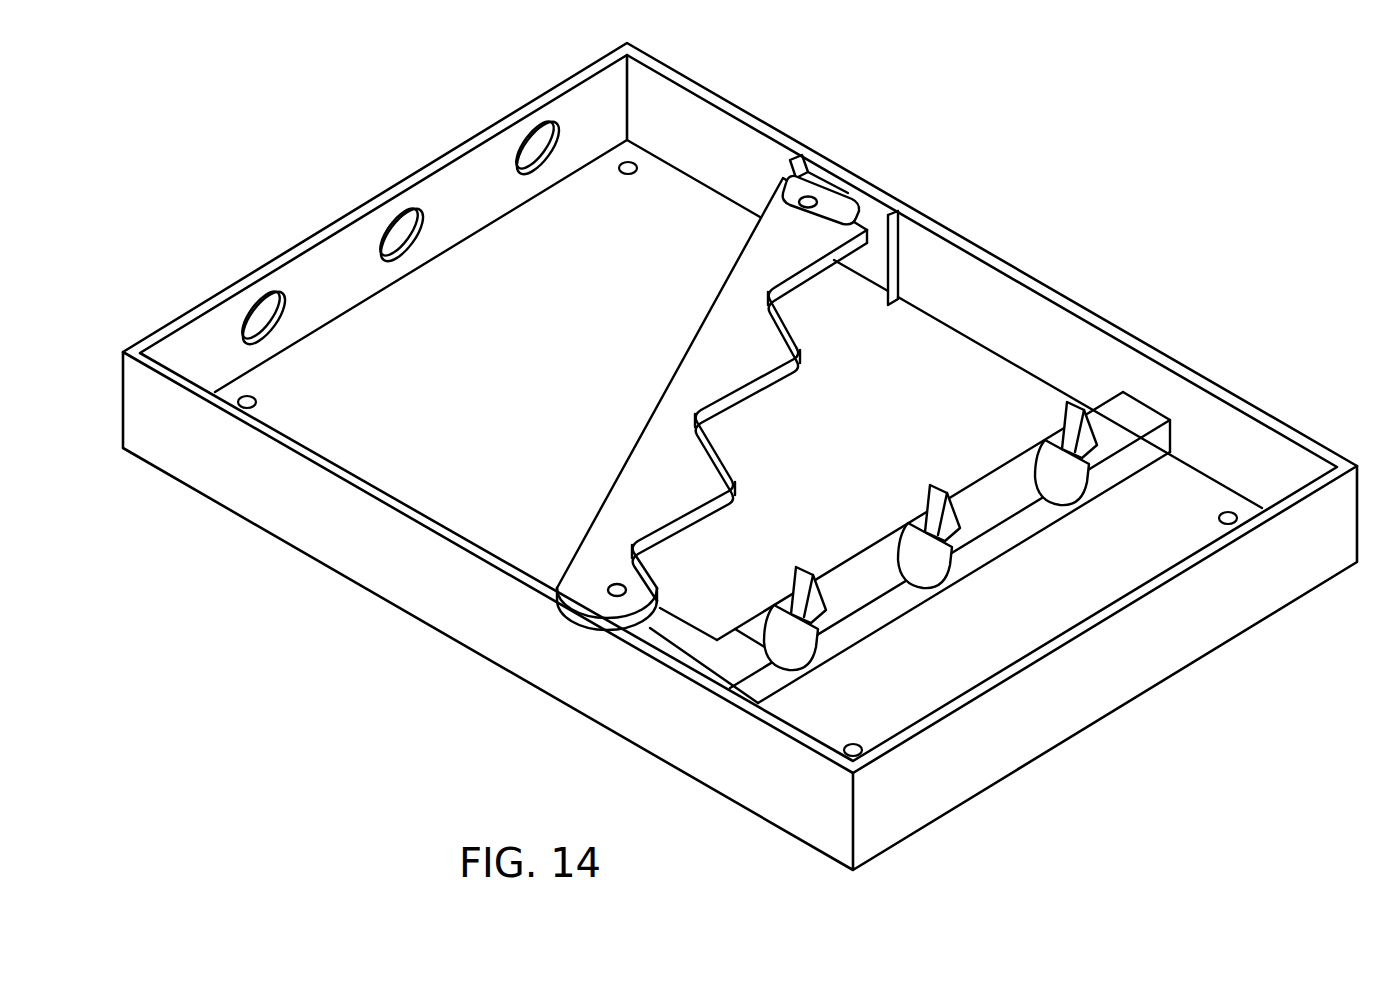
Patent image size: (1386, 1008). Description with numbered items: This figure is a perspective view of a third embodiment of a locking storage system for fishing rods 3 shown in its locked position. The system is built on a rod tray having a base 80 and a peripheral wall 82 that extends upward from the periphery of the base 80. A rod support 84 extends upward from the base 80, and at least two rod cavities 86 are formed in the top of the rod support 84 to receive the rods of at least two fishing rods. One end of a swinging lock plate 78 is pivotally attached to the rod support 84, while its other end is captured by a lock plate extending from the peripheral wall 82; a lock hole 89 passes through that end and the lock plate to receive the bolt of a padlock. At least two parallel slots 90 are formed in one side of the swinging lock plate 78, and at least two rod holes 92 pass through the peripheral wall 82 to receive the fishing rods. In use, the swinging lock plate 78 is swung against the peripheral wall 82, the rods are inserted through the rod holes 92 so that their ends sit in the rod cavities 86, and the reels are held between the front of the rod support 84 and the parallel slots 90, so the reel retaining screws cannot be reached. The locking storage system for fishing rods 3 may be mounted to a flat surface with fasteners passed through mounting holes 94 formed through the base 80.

The locking storage system for fishing rods 3 is at (740, 456).
The swinging lock plate 78 is at (727, 359).
The base 80 is at (467, 396).
The peripheral wall 82 is at (425, 575).
The rod support 84 is at (910, 404).
The rod cavities 86 is at (828, 193).
The lock hole 89 is at (810, 195).
The parallel slots 90 is at (752, 401).
The rod holes 92 is at (261, 306).
The mounting holes 94 is at (631, 163).